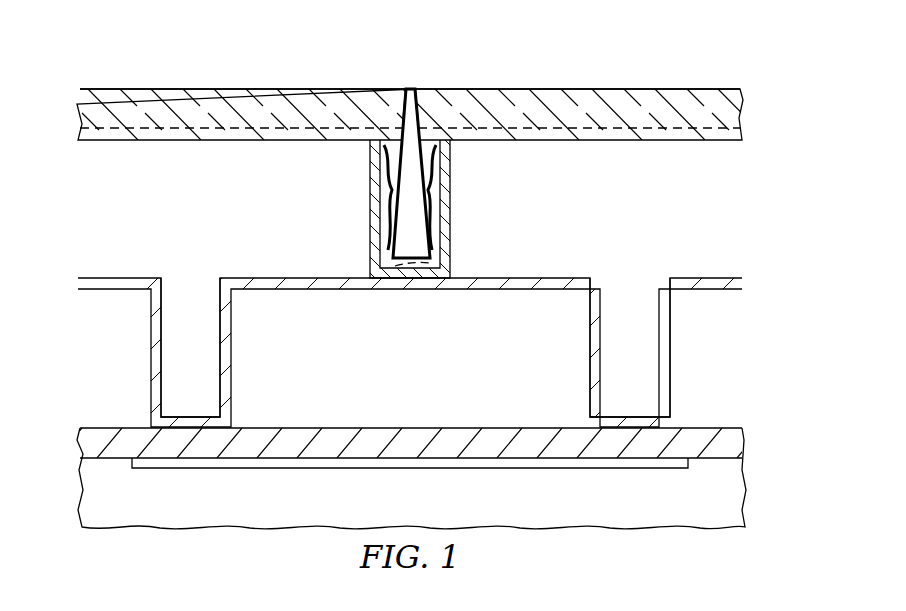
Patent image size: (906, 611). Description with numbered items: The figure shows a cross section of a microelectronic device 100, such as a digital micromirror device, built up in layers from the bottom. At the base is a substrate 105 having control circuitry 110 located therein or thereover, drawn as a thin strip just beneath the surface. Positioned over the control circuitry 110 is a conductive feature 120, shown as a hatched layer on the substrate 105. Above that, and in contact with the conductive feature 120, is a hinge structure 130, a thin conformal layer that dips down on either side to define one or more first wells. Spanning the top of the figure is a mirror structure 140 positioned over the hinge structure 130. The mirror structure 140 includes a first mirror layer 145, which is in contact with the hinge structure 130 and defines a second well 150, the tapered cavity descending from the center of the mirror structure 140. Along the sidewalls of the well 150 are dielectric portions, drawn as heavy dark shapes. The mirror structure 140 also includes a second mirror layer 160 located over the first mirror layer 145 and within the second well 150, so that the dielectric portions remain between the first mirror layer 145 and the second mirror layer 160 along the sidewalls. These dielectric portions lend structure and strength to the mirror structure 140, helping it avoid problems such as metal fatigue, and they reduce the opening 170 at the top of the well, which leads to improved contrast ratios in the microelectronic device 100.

The microelectronic device 100 is at (419, 265).
The substrate 105 is at (392, 509).
The control circuitry 110 is at (541, 460).
The conductive feature 120 is at (82, 438).
The hinge structure 130 is at (80, 283).
The mirror structure 140 is at (63, 88).
The first mirror layer 145 is at (210, 138).
The second wells 150 is at (420, 240).
The second mirror layer 160 is at (617, 97).
The opening 170 is at (409, 72).